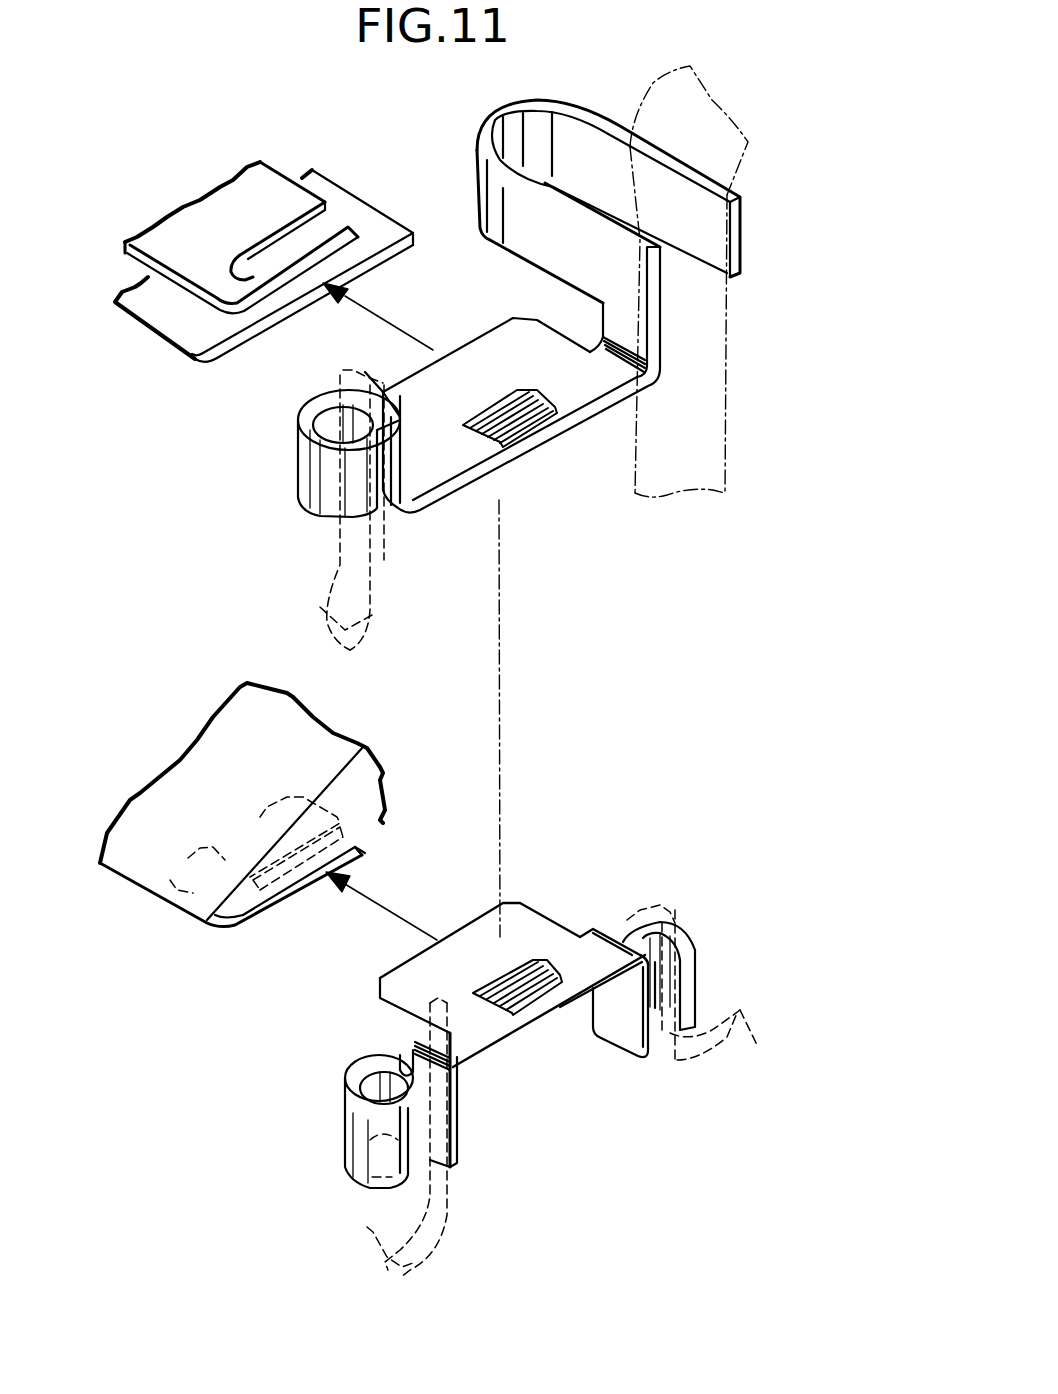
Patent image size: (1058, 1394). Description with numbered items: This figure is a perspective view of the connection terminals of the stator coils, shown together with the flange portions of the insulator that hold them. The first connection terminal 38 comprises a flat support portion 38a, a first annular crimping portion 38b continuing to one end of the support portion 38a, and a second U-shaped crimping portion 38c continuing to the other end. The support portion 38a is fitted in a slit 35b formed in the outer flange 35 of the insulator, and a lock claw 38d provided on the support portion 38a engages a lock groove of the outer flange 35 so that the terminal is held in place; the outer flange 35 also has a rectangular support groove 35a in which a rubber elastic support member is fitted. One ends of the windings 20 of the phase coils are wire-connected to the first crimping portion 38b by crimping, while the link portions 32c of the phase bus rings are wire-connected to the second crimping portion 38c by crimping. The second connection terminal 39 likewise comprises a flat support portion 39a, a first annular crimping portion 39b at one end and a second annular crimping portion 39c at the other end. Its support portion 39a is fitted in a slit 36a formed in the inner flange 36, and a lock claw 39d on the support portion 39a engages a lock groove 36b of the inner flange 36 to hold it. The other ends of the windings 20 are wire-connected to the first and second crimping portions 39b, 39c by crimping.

The winding 20 is at (343, 567).
The link portion 32c is at (697, 475).
The outer flange 35 is at (264, 231).
The support groove 35a is at (278, 305).
The slit 35b is at (251, 253).
The inner flange 36 is at (254, 852).
The slit 36a is at (270, 907).
The lock groove 36b is at (357, 842).
The first connection terminal 38 is at (455, 341).
The support portion 38a is at (473, 358).
The first crimping portion 38b is at (307, 467).
The second crimping portion 38c is at (597, 142).
The lock claw 38d is at (517, 408).
The second connection terminal 39 is at (495, 1006).
The support portion 39a is at (525, 918).
The first crimping portion 39b is at (347, 1128).
The second crimping portion 39c is at (687, 975).
The lock claw 39d is at (530, 993).